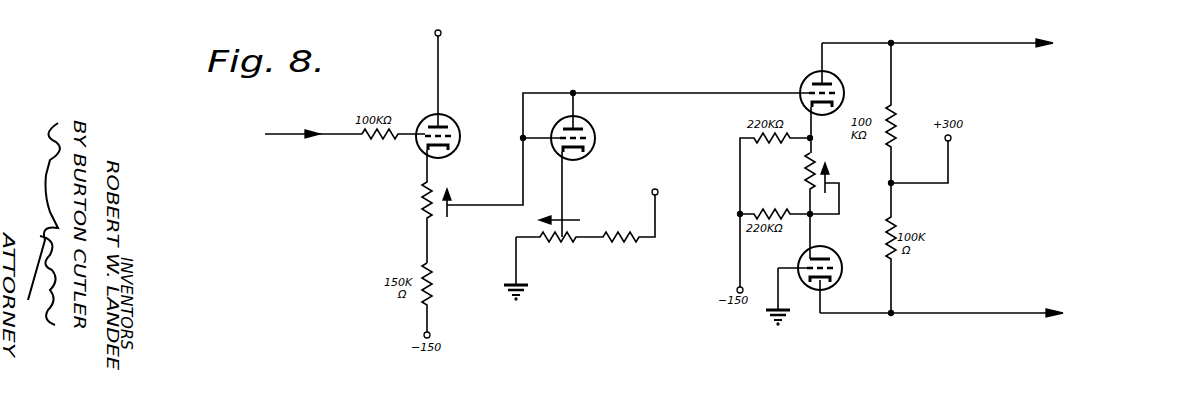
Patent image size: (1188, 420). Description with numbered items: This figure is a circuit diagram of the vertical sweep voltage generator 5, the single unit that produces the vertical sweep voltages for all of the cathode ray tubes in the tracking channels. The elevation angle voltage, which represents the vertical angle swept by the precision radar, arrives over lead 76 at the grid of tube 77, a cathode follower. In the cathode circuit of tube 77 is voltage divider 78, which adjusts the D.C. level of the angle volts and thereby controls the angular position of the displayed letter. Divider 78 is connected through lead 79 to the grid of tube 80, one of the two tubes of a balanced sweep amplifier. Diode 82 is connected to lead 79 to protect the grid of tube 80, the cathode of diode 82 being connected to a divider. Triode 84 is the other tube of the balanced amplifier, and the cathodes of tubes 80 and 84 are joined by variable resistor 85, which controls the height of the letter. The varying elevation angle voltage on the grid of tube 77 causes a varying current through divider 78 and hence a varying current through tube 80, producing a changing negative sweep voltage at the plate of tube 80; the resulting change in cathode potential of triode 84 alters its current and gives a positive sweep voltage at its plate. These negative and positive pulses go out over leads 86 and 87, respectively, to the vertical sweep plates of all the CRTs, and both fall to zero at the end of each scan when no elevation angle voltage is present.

The vertical sweep voltage generator 5 is at (491, 167).
The lead 76 is at (293, 135).
The tube 77 is at (451, 119).
The voltage divider 78 is at (432, 223).
The lead 79 is at (486, 210).
The tube 80 is at (840, 78).
The diode 82 is at (592, 123).
The triode 84 is at (838, 278).
The variable resistor 85 is at (590, 242).
The lead 86 is at (1002, 45).
The lead 87 is at (972, 312).